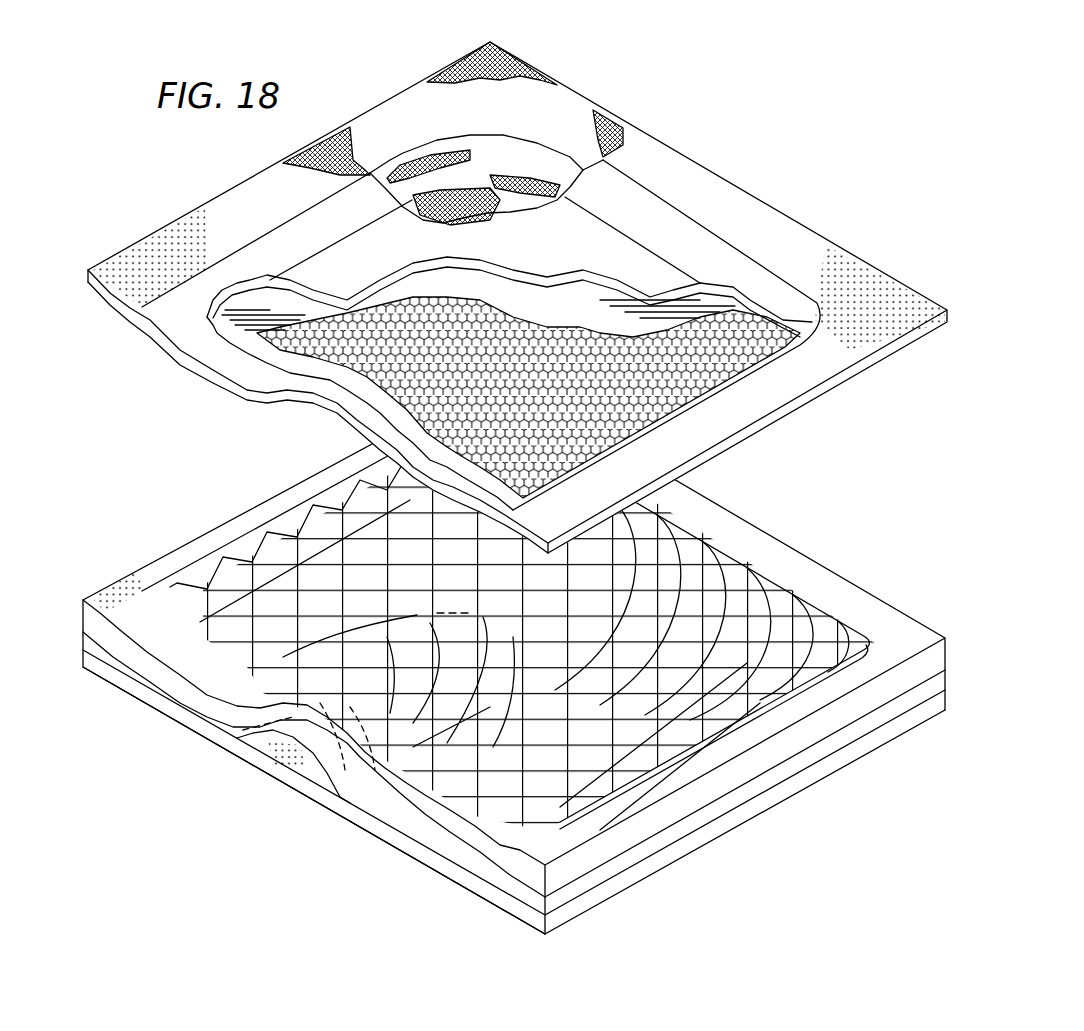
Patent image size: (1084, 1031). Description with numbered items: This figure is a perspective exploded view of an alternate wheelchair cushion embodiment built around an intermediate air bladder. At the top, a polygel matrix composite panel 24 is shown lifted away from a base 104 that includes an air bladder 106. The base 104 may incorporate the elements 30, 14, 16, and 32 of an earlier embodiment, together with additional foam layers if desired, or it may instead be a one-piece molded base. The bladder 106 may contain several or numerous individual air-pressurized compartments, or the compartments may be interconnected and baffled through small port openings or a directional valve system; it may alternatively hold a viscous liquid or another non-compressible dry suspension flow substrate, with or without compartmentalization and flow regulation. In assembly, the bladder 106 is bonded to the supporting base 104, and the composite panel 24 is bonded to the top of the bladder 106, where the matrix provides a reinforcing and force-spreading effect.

The polygel matrix composite panel 24 is at (719, 172).
The base element 14 is at (514, 661).
The base 104 is at (730, 827).
The air bladder 106 is at (720, 573).
The base element 32 is at (180, 692).
The base element 16 is at (263, 743).
The base element 30 is at (413, 847).